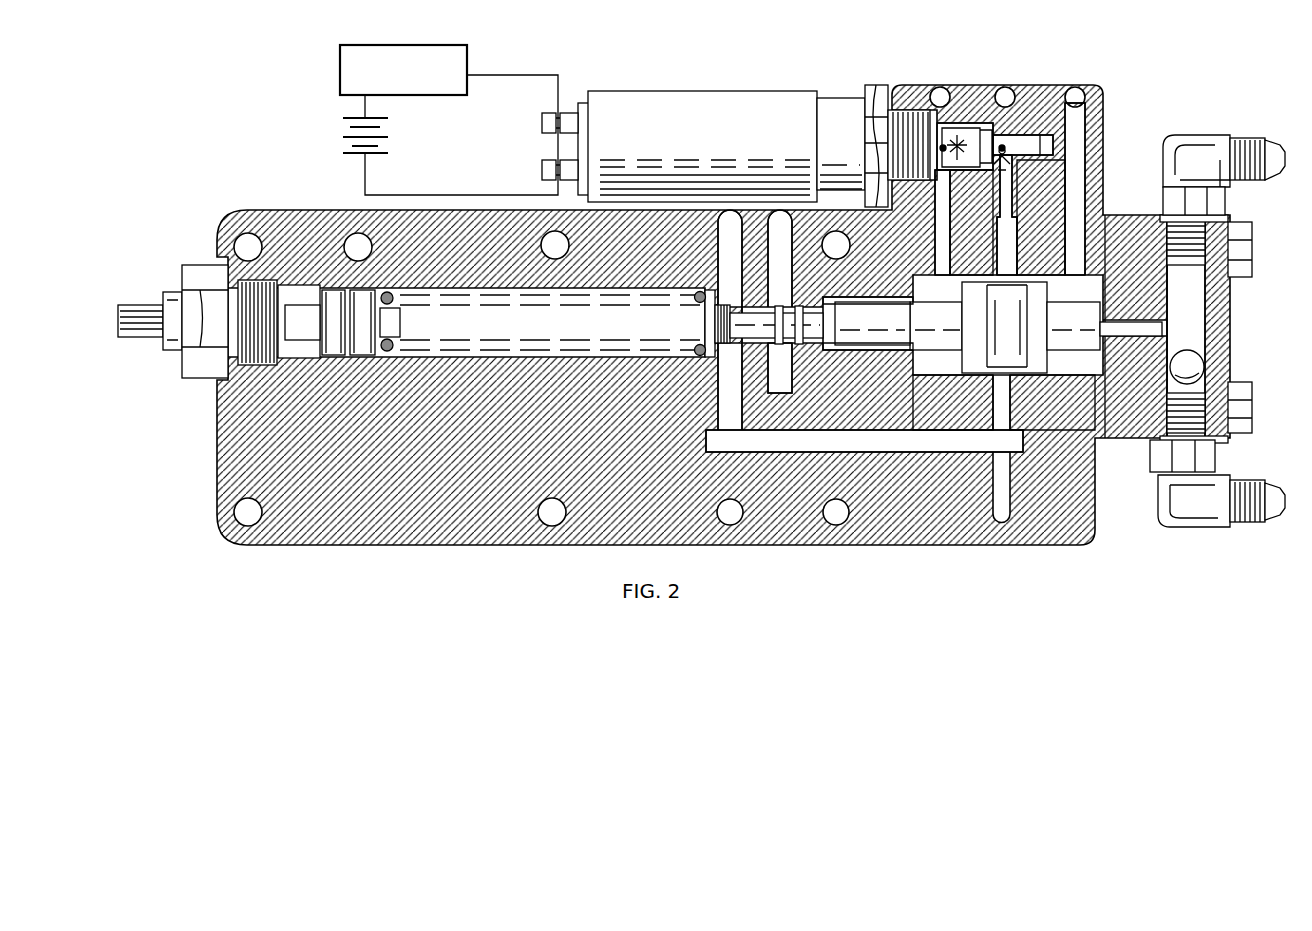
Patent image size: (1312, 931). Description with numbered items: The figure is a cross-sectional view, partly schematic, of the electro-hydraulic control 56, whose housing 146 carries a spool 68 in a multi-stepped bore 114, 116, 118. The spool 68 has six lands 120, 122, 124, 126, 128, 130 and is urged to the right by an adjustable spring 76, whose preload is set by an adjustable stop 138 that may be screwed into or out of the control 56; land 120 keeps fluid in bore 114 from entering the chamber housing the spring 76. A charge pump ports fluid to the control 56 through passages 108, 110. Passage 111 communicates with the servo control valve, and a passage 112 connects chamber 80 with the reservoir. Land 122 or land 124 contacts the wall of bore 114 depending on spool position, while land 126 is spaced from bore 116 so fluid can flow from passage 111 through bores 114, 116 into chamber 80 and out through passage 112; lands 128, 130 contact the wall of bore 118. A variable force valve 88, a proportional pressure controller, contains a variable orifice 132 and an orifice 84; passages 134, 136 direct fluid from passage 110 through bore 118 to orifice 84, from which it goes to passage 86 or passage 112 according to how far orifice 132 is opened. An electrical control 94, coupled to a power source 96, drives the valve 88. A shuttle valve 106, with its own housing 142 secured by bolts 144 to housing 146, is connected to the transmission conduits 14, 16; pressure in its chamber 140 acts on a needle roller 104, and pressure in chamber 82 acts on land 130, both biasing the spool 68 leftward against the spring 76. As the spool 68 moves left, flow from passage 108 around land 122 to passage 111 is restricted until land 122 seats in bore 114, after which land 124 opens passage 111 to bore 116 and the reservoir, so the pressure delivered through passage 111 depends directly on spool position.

The conduit 14 is at (1285, 146).
The conduit 16 is at (1285, 494).
The electro-hydraulic control 56 is at (292, 200).
The spool 68 is at (705, 352).
The adjustable spring 76 is at (478, 350).
The chamber 80 is at (888, 326).
The chamber 82 is at (1073, 314).
The orifice 84 is at (1008, 172).
The passage 86 is at (1065, 228).
The variable force valve 88 is at (850, 97).
The electrical control 94 is at (449, 120).
The power source 96 is at (394, 140).
The needle roller 104 is at (1115, 338).
The shuttle valve 106 is at (1212, 335).
The passage 108 is at (730, 416).
The passage 110 is at (855, 450).
The passage 111 is at (788, 270).
The passage 112 is at (945, 216).
The bore 114 is at (835, 350).
The bore 116 is at (886, 350).
The bore 118 is at (1058, 376).
The land 120 is at (705, 296).
The land 122 is at (778, 346).
The land 124 is at (808, 306).
The land 126 is at (882, 306).
The land 128 is at (976, 275).
The land 130 is at (1040, 275).
The variable orifice 132 is at (962, 130).
The passage 134 is at (996, 398).
The passage 136 is at (1014, 228).
The adjustable stop 138 is at (200, 380).
The chamber 140 is at (1210, 308).
The housing 142 is at (1133, 250).
The bolts 144 is at (1252, 245).
The housing 146 is at (490, 485).